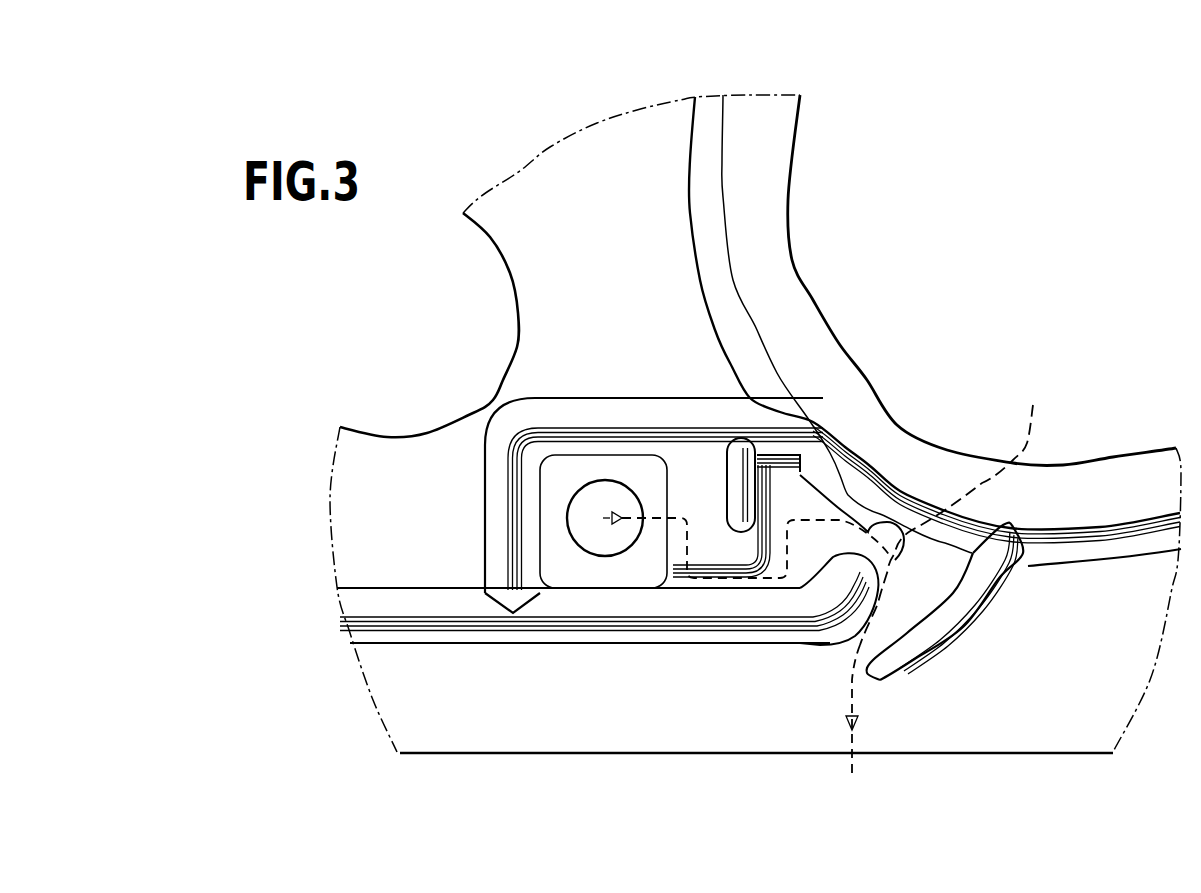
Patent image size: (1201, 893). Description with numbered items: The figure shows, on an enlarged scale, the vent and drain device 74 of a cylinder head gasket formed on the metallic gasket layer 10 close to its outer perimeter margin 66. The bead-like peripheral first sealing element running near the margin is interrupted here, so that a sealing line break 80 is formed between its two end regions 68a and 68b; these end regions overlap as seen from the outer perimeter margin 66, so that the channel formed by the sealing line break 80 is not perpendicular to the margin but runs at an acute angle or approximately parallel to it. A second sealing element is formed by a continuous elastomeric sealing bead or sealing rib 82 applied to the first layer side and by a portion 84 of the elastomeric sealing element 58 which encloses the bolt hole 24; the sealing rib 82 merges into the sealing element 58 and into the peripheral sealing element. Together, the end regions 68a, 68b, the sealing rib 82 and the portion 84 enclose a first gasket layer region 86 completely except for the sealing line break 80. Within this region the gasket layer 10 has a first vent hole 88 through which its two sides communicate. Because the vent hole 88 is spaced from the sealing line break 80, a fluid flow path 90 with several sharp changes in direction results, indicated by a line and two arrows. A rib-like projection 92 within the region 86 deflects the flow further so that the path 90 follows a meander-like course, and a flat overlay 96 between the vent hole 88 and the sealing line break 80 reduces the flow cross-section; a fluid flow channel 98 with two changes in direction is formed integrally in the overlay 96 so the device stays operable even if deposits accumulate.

The metallic gasket layer 10 is at (1047, 650).
The bolt hole 24 is at (787, 207).
The elastomeric sealing element 58 is at (730, 140).
The outer perimeter margin 66 is at (897, 757).
The end region of the sealing element 68a is at (665, 630).
The end region of the sealing element 68b is at (967, 643).
The vent and drain device 74 is at (738, 654).
The sealing line break 80 is at (847, 641).
The sealing bead or sealing rib 82 is at (618, 413).
The portion of the elastomeric sealing element 84 is at (887, 477).
The first gasket layer region 86 is at (540, 551).
The first vent hole 88 is at (588, 510).
The fluid flow path 90 is at (955, 509).
The projection 92 is at (740, 470).
The flat overlay 96 is at (655, 558).
The fluid flow channel 98 is at (792, 468).